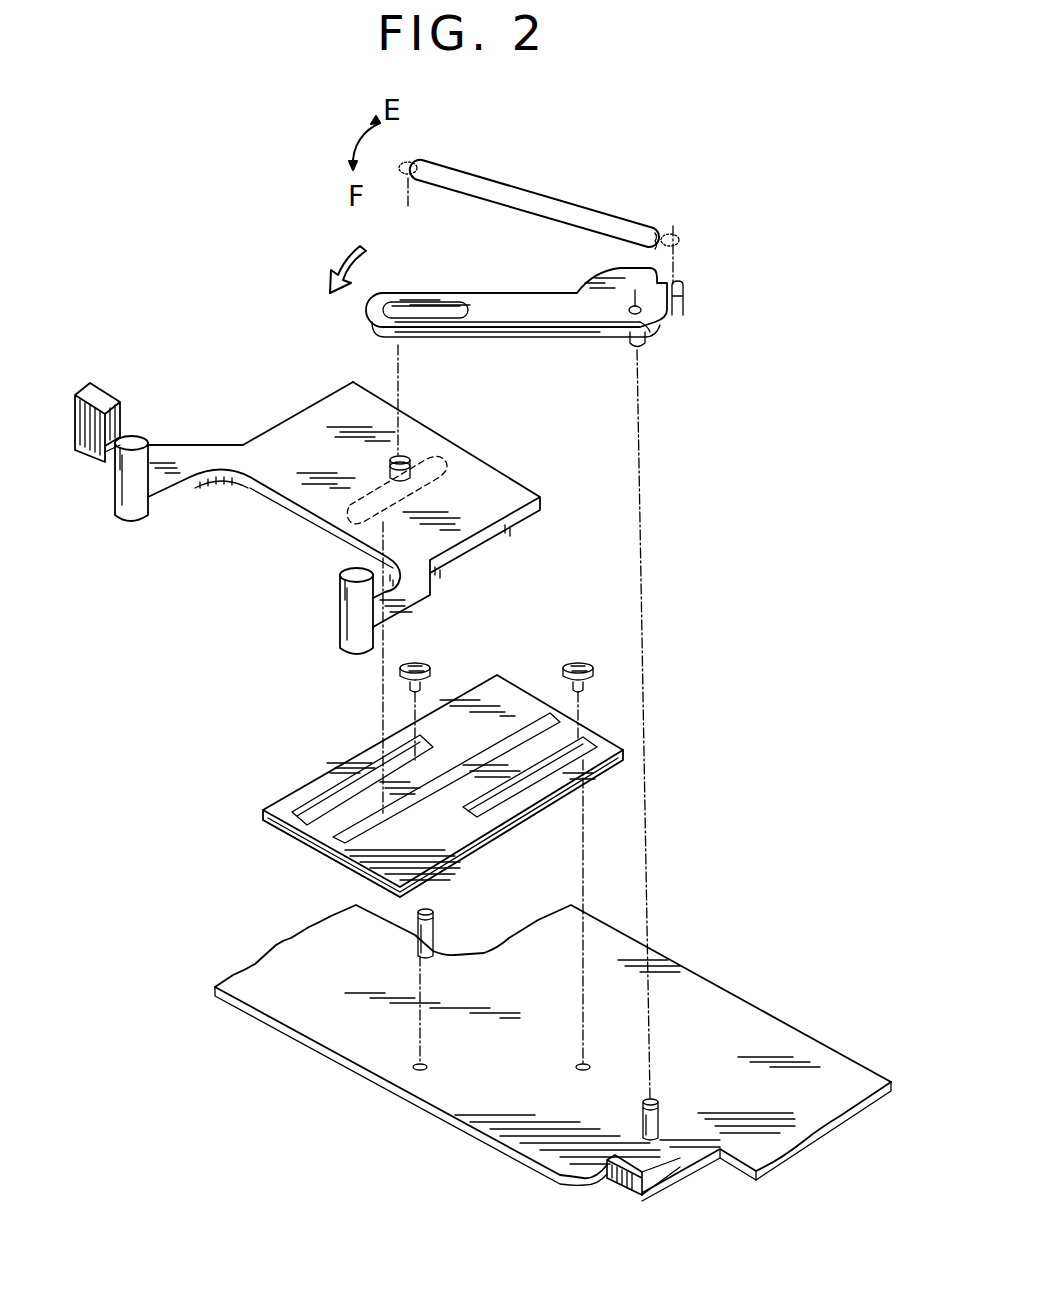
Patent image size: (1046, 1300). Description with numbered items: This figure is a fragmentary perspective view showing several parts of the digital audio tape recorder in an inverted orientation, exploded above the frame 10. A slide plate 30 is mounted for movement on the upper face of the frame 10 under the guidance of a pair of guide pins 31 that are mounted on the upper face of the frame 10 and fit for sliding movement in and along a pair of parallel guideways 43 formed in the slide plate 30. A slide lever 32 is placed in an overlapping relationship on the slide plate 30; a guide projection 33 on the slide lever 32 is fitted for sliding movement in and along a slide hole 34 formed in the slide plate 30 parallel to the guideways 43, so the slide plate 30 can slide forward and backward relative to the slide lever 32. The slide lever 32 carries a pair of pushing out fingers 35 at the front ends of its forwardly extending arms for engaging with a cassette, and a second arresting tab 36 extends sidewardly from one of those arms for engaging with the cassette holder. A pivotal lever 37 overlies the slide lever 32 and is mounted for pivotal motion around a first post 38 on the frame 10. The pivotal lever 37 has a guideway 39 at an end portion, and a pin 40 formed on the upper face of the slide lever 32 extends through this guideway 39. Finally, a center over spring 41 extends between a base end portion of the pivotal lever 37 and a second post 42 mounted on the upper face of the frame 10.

The frame 10 is at (498, 1135).
The slide plate 30 is at (612, 753).
The guide pins 31 is at (570, 660).
The slide lever 32 is at (477, 473).
The guide projection 33 is at (323, 530).
The slide hole 34 is at (333, 852).
The pushing out fingers 35 is at (122, 523).
The second arresting tab 36 is at (78, 453).
The pivotal lever 37 is at (530, 308).
The first post 38 is at (662, 1116).
The guideway 39 is at (427, 310).
The pin 40 is at (410, 456).
The center over spring 41 is at (578, 206).
The second post 42 is at (433, 938).
The guideways 43 is at (333, 802).